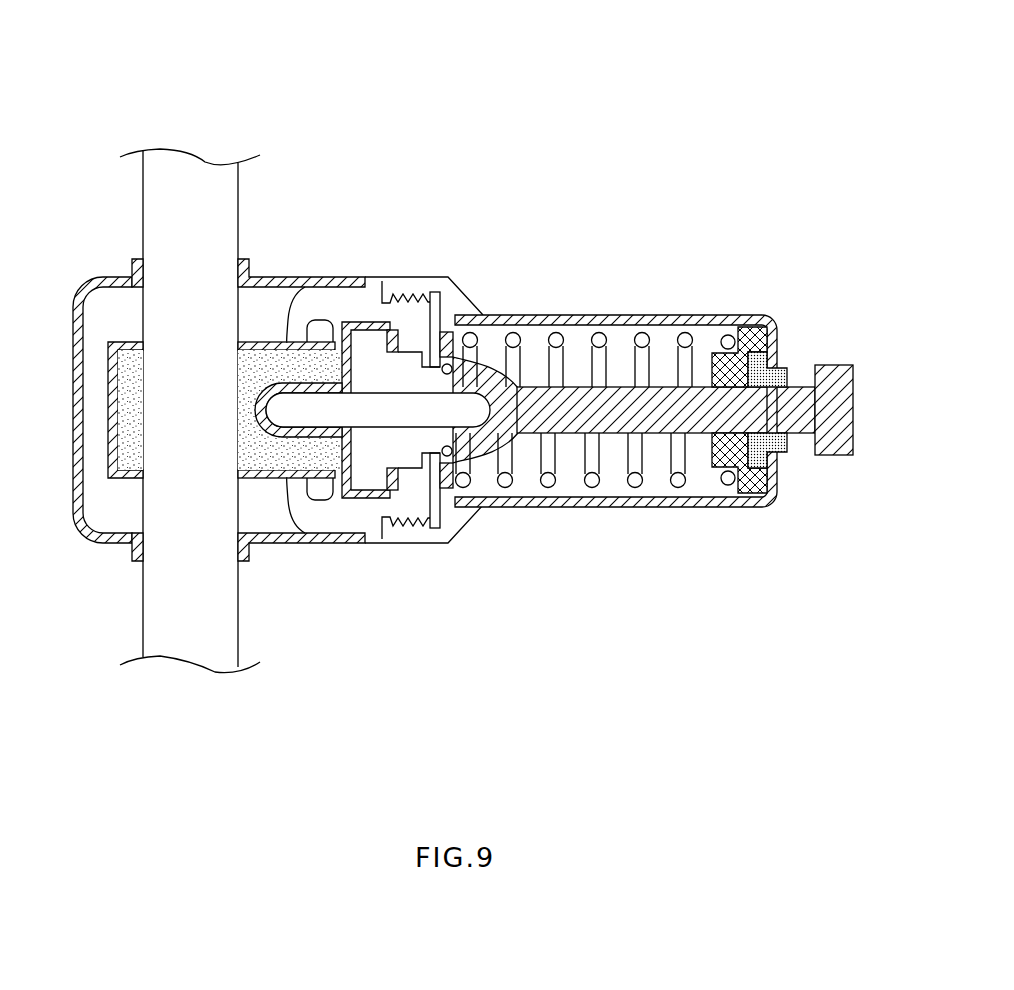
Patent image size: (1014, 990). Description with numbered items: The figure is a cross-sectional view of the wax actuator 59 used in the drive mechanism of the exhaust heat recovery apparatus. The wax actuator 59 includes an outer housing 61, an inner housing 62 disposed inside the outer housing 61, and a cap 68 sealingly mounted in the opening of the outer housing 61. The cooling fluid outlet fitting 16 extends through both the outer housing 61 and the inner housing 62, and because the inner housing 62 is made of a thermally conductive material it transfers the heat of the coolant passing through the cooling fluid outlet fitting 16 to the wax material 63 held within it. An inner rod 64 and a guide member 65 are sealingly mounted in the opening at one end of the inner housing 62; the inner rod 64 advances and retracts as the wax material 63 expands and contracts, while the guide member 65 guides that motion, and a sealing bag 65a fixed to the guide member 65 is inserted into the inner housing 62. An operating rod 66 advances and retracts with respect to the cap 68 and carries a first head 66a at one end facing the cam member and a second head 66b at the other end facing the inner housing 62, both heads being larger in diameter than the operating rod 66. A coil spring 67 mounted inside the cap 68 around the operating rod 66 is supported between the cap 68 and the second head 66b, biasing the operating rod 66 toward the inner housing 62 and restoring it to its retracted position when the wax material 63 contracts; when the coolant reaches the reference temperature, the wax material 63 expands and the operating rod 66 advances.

The wax actuator 59 is at (62, 129).
The cooling fluid outlet fitting 16 is at (157, 609).
The outer housing 61 is at (322, 545).
The inner housing 62 is at (266, 342).
The wax material 63 is at (130, 397).
The inner rod 64 is at (381, 406).
The guide member 65 is at (408, 452).
The sealing bag 65a is at (268, 433).
The operating rod 66 is at (663, 400).
The first head 66a is at (853, 410).
The second head 66b is at (445, 332).
The coil spring 67 is at (592, 487).
The cap 68 is at (595, 315).